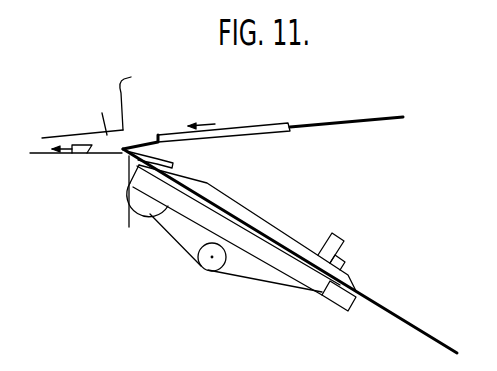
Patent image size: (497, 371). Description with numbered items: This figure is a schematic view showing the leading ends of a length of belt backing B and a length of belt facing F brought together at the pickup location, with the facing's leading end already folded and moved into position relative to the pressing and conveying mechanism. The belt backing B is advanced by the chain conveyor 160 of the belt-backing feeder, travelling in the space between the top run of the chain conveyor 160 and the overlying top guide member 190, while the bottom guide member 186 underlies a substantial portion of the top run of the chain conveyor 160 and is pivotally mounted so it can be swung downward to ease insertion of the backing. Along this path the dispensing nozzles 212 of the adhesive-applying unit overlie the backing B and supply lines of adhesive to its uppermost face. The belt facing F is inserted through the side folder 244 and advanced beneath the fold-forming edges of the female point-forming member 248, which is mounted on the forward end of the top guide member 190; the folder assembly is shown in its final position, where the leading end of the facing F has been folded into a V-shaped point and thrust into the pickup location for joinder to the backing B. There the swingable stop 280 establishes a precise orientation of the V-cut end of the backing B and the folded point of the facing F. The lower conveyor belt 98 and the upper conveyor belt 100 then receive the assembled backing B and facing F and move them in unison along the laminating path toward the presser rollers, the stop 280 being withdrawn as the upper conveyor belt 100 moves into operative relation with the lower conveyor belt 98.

The upper conveyor belt 100 is at (97, 103).
The lower conveyor belt 98 is at (40, 155).
The stop 280 is at (80, 153).
The female point-forming member 248 is at (128, 162).
The side folder 244 is at (253, 129).
The top guide member 190 is at (263, 225).
The dispensing nozzles 212 is at (339, 243).
The chain conveyor 160 is at (245, 276).
The bottom guide member 186 is at (338, 299).
The belt backing B is at (123, 157).
The belt facing F is at (143, 144).